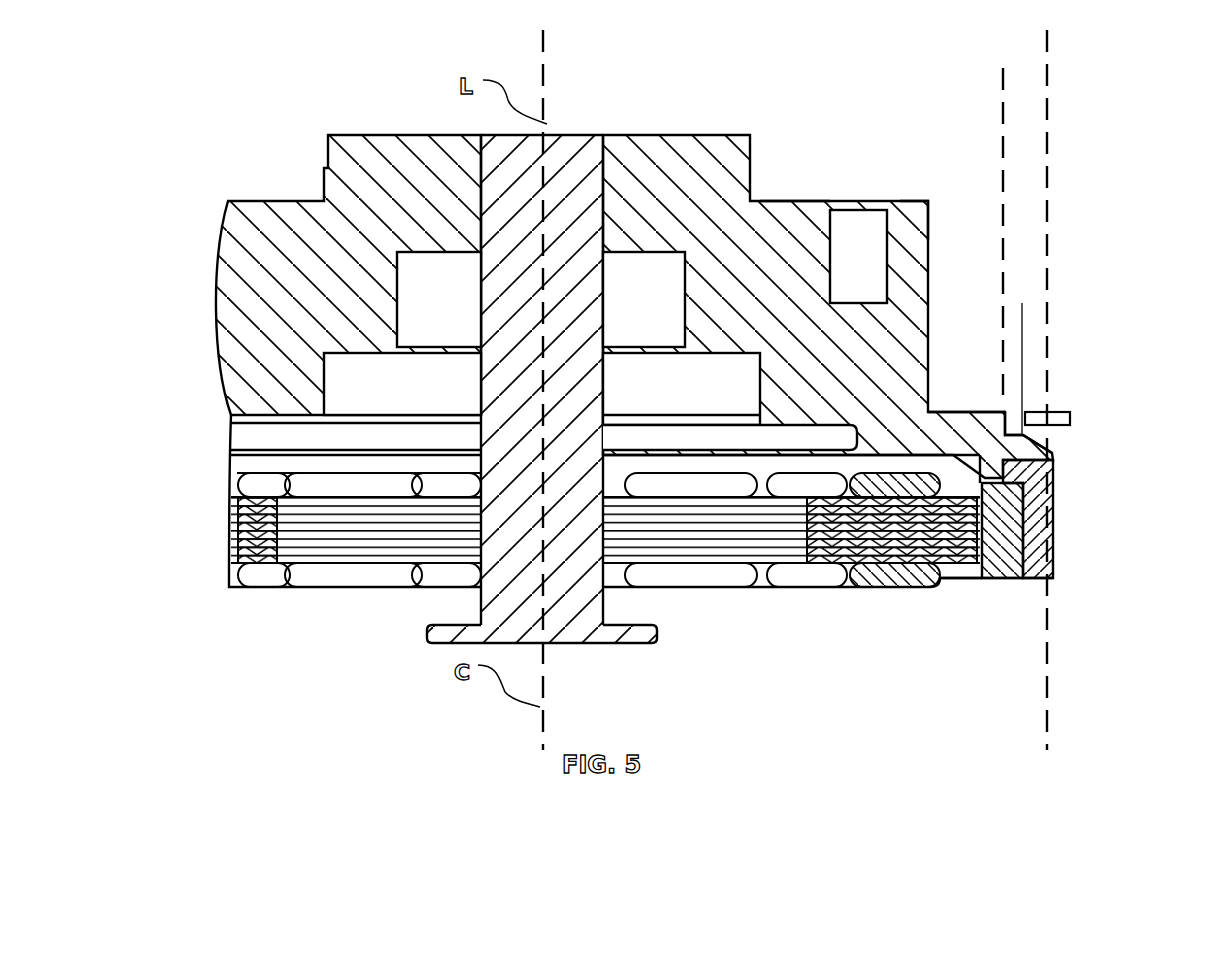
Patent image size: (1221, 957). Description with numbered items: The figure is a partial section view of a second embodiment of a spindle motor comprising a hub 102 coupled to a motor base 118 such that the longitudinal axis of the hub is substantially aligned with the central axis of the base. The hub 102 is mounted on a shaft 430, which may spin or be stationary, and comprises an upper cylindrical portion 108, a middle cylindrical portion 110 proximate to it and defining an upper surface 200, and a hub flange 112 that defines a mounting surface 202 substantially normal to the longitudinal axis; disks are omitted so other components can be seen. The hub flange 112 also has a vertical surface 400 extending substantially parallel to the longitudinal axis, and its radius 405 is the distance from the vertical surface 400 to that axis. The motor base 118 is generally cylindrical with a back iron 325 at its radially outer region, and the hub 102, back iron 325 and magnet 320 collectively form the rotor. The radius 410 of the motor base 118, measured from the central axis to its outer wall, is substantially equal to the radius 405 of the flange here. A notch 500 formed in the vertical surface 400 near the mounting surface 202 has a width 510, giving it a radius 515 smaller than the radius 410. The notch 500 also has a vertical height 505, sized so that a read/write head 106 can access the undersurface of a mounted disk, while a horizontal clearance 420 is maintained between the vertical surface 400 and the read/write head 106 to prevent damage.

The hub 102 is at (226, 133).
The motor base 118 is at (226, 455).
The upper cylindrical portion 108 is at (752, 135).
The upper surface 200 is at (790, 201).
The middle cylindrical portion 110 is at (930, 210).
The mounting surface 202 is at (963, 411).
The horizontal separation or clearance 420 is at (982, 327).
The hub flange 112 is at (1012, 411).
The read/write head 106 is at (1080, 411).
The vertical height 505 is at (1080, 412).
The notch 500 is at (1050, 432).
The vertical surface 400 is at (1053, 452).
The magnet 320 is at (1046, 579).
The back iron 325 is at (1000, 579).
The shaft 430 is at (565, 645).
The radius 405 is at (1047, 53).
The radius 515 is at (1003, 91).
The width 510 is at (1003, 223).
The radius 410 is at (1047, 722).